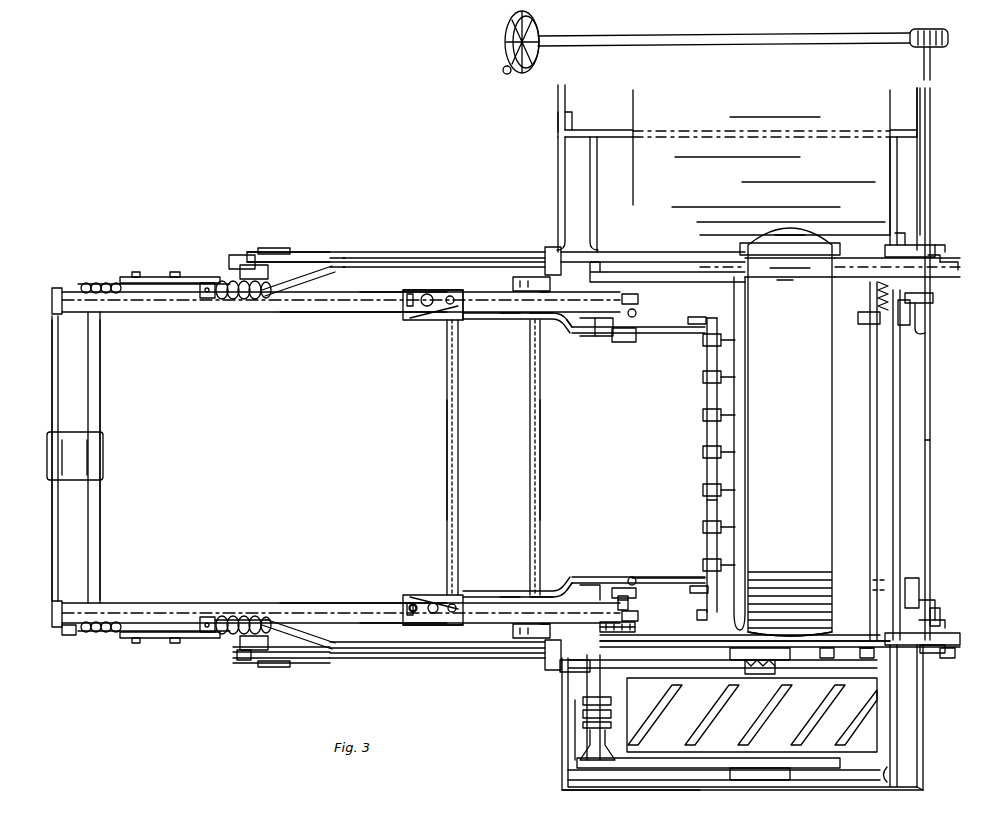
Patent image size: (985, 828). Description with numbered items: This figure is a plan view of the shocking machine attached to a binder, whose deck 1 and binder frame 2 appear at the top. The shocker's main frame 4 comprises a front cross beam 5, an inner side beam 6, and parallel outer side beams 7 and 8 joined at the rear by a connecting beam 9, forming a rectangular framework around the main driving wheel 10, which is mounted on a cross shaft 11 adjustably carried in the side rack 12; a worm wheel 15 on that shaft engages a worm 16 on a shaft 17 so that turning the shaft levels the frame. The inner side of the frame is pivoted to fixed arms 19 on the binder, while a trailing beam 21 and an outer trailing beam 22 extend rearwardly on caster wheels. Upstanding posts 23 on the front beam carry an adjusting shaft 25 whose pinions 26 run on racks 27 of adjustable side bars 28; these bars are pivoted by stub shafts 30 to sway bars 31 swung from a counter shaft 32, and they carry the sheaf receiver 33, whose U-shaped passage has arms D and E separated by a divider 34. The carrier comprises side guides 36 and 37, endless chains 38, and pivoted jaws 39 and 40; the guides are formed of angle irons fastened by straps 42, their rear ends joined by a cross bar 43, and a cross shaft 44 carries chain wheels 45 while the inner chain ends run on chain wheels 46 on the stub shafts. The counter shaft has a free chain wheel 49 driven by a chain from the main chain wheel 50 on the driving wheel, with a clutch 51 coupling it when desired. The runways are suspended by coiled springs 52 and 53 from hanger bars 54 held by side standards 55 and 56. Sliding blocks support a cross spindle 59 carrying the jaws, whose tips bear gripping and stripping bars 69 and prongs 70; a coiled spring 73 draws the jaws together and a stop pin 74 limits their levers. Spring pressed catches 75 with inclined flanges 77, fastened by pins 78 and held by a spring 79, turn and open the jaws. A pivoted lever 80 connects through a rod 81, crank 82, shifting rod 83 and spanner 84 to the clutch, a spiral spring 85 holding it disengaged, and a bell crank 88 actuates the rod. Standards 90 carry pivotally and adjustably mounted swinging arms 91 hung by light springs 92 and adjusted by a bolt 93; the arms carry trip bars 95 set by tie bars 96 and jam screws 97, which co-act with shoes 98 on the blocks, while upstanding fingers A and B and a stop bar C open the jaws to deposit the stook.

The deck 1 is at (633, 160).
The binder frame 2 is at (558, 95).
The main frame 4 is at (923, 700).
The front cross beam 5 is at (923, 735).
The inner side beam 6 is at (848, 258).
The outer side beam 7 is at (570, 672).
The outer side beam 8 is at (562, 782).
The connecting beam 9 is at (588, 725).
The main driving wheel 10 is at (714, 715).
The cross shaft 11 is at (720, 772).
The side rack 12 is at (770, 768).
The worm wheel 15 is at (790, 655).
The worm 16 is at (780, 676).
The shaft 17 is at (585, 700).
The fixed arm 19 is at (562, 190).
The trailing beam 21 is at (885, 435).
The outer trailing beam 22 is at (330, 660).
The upstanding post 23 is at (940, 612).
The adjusting shaft 25 is at (930, 460).
The pinion 26 is at (932, 650).
The rack 27 is at (945, 650).
The adjustable side bar 28 is at (833, 636).
The stub shaft 30 is at (618, 588).
The sway bar 31 is at (636, 628).
The counter shaft 32 is at (640, 700).
The sheaf receiver 33 is at (790, 432).
The divider 34 is at (737, 432).
The side guide 36 is at (335, 603).
The side guide 37 is at (350, 313).
The endless chain 38 is at (290, 603).
The jaw 39 is at (690, 580).
The jaw 40 is at (555, 591).
The strap 42 is at (70, 636).
The cross bar 43 is at (52, 545).
The cross shaft 44 is at (98, 560).
The chain wheel 45 is at (100, 612).
The chain wheel 46 is at (636, 582).
The free chain wheel 49 is at (577, 763).
The main chain wheel 50 is at (828, 748).
The clutch 51 is at (590, 735).
The coiled spring 52 is at (240, 623).
The coiled spring 53 is at (252, 636).
The hanger bar 54 is at (295, 648).
The side standard 55 is at (305, 253).
The side standard 56 is at (560, 670).
The cross spindle 59 is at (540, 490).
The gripping and stripping bar 69 is at (745, 382).
The prong 70 is at (745, 490).
The coiled spring 73 is at (640, 577).
The stop pin 74 is at (708, 593).
The spring pressed catch 75 is at (435, 612).
The inclined flange 77 is at (430, 596).
The pin 78 is at (412, 613).
The spring 79 is at (452, 613).
The pivoted lever 80 is at (865, 326).
The rod 81 is at (827, 659).
The crank 82 is at (627, 604).
The shifting rod 83 is at (575, 706).
The spanner 84 is at (612, 712).
The spiral spring 85 is at (876, 298).
The bell crank 88 is at (910, 578).
The plate 90 is at (155, 640).
The swinging arm 91 is at (235, 645).
The coiled spring 92 is at (100, 635).
The bolt 93 is at (268, 668).
The trip bar 95 is at (203, 628).
The tie bar 96 is at (170, 645).
The jam screw 97 is at (137, 645).
The shoe 98 is at (513, 630).
The upstanding finger A is at (590, 583).
The upstanding finger B is at (583, 345).
The stop bar C is at (90, 455).
The arm of passage D is at (712, 392).
The arm of passage E is at (735, 470).